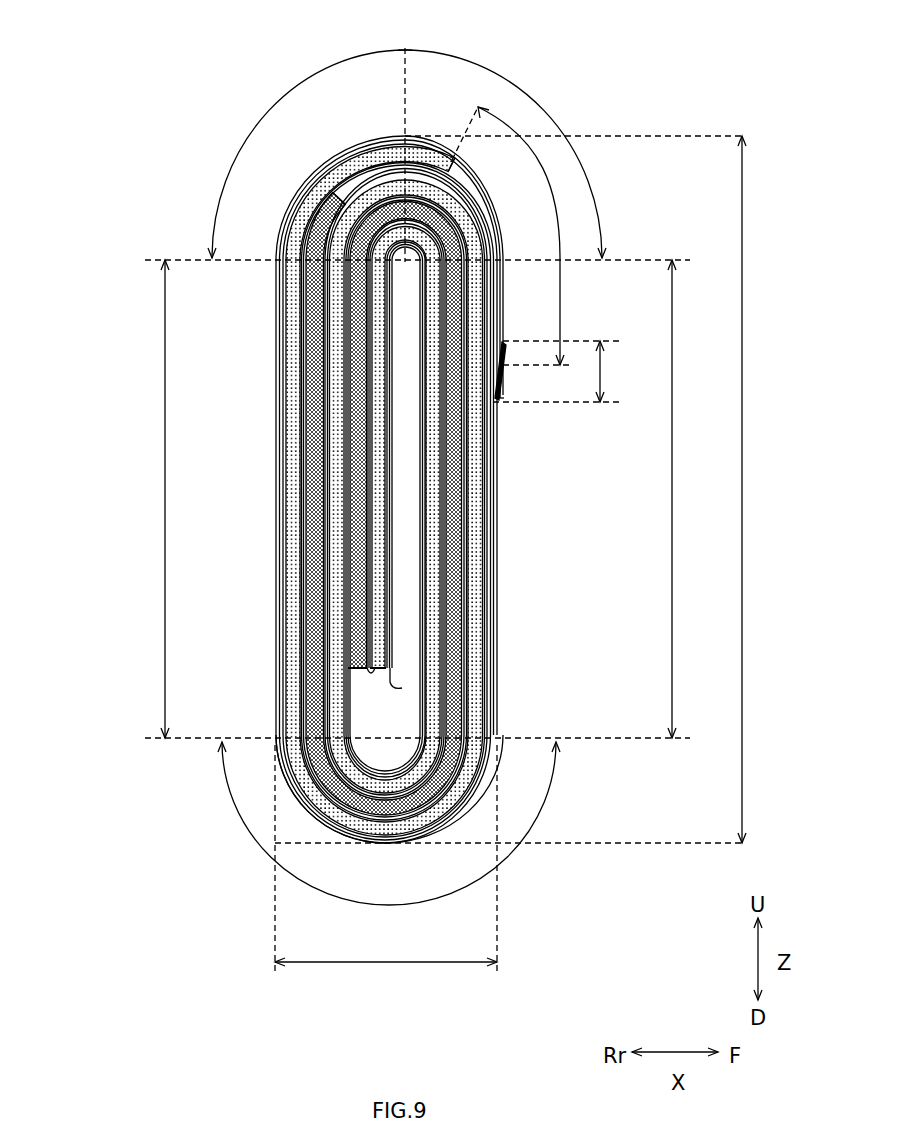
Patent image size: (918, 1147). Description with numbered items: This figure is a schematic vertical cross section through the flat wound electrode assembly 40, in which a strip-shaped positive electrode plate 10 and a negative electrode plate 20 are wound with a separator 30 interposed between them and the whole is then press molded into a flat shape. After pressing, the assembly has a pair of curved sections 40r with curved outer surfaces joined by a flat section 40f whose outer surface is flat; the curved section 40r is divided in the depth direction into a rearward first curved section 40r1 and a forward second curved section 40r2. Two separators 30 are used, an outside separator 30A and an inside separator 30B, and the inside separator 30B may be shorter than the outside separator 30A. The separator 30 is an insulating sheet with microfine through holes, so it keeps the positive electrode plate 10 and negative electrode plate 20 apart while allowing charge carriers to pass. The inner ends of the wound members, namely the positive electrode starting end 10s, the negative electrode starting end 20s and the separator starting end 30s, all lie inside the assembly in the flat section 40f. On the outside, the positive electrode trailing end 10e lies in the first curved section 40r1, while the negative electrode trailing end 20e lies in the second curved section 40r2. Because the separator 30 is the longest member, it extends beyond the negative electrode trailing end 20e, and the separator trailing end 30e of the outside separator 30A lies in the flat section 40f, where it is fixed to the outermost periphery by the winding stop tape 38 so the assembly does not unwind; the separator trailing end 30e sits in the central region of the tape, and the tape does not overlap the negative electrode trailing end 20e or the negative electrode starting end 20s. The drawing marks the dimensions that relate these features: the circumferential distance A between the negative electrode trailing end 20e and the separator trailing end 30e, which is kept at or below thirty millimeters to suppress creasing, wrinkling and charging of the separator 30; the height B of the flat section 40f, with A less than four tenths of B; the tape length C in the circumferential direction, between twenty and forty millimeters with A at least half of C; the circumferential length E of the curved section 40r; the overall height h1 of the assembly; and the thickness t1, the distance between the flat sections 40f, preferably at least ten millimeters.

The wound electrode assembly 40 is at (135, 31).
The first curved section 40r1 is at (294, 154).
The second curved section 40r2 is at (513, 154).
The curved section 40r is at (352, 844).
The flat section 40f is at (146, 499).
The positive electrode plate 10 is at (310, 330).
The negative electrode plate 20 is at (298, 387).
The separator 30 is at (327, 508).
The outside separator 30A is at (501, 325).
The inside separator 30B is at (497, 283).
The positive electrode trailing end 10e is at (343, 197).
The negative electrode trailing end 20e is at (450, 173).
The separator trailing end 30e is at (498, 393).
The positive electrode starting end 10s is at (358, 670).
The negative electrode starting end 20s is at (388, 668).
The separator starting end 30s is at (376, 668).
The winding stop tape 38 is at (499, 393).
The distance between negative electrode trailing end and separator trailing end A is at (524, 236).
The dimension of flat section in height direction B is at (683, 499).
The length of winding stop tape C is at (609, 371).
The length in circumferential direction of curved section E is at (386, 823).
The dimension in height direction of wound electrode assembly h1 is at (756, 489).
The thickness of wound electrode assembly t1 is at (386, 977).